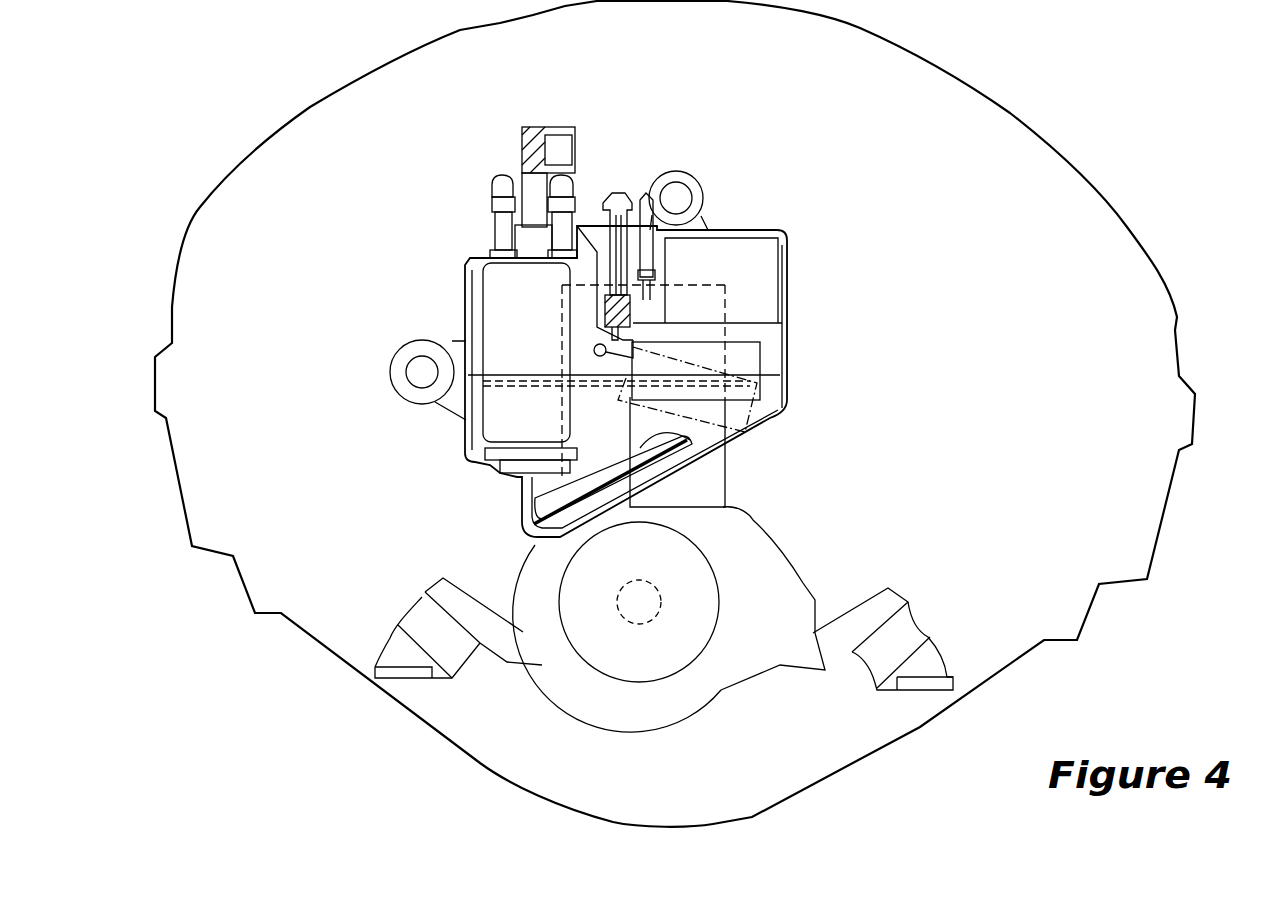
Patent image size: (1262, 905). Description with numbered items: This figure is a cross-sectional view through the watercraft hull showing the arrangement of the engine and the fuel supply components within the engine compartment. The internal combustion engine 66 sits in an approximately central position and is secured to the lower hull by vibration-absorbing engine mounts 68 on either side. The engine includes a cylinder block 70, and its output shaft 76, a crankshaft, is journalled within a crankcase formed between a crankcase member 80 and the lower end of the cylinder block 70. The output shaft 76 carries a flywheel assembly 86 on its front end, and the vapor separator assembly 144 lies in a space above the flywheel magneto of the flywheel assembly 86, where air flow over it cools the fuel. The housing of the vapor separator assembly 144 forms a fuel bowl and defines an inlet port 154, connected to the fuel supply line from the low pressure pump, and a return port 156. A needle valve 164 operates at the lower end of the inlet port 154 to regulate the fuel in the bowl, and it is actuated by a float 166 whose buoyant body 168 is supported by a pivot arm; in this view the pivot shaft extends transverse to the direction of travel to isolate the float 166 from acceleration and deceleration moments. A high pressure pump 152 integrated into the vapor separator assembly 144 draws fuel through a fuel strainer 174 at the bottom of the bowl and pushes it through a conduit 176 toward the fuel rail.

The internal combustion engine 66 is at (488, 534).
The vibration-absorbing engine mounts 68 is at (448, 650).
The cylinder block 70 is at (710, 485).
The output shaft 76 is at (653, 603).
The crankcase member 80 is at (598, 690).
The flywheel assembly 86 is at (672, 667).
The vapor separator assembly 144 is at (798, 266).
The high pressure pump 152 is at (497, 411).
The inlet port 154 is at (620, 223).
The return port 156 is at (648, 312).
The needle valve 164 is at (638, 337).
The float 166 is at (577, 355).
The buoyant body 168 is at (755, 362).
The fuel strainer 174 is at (690, 440).
The conduit 176 is at (600, 148).